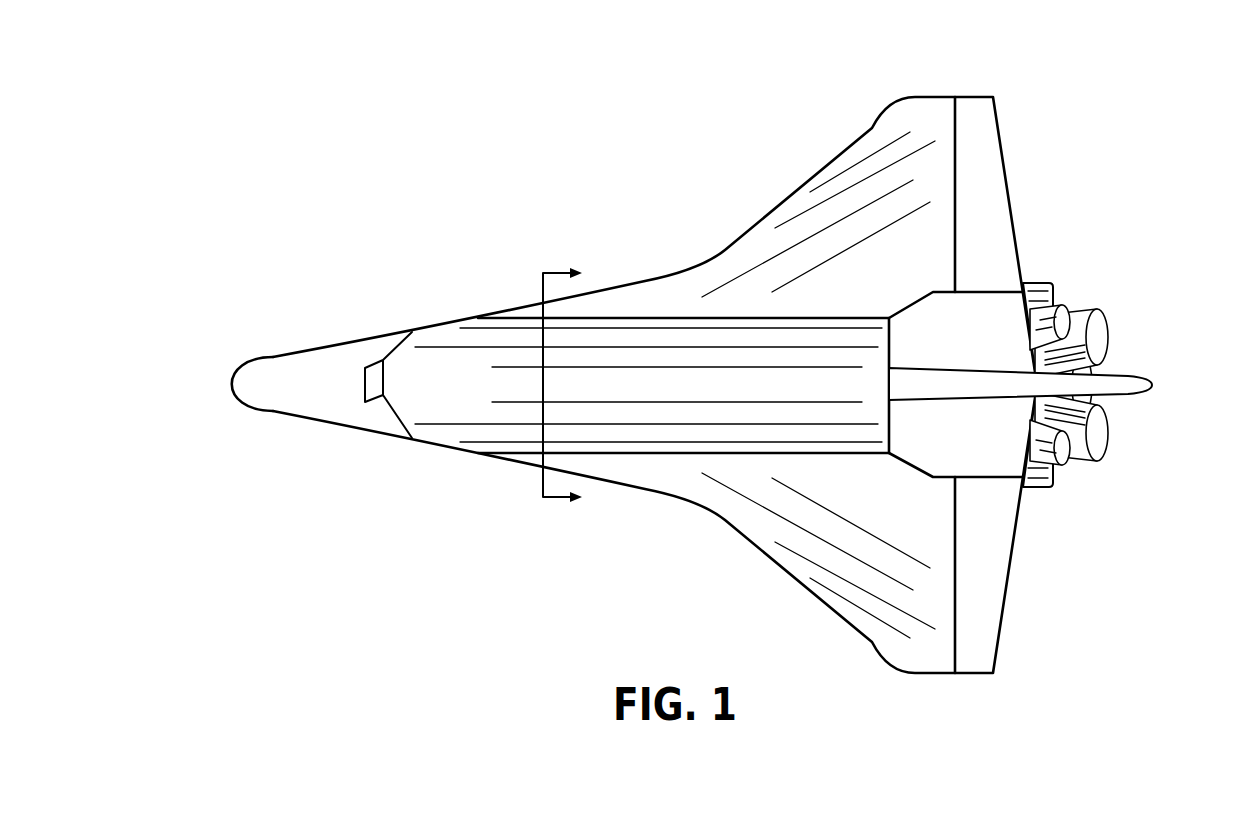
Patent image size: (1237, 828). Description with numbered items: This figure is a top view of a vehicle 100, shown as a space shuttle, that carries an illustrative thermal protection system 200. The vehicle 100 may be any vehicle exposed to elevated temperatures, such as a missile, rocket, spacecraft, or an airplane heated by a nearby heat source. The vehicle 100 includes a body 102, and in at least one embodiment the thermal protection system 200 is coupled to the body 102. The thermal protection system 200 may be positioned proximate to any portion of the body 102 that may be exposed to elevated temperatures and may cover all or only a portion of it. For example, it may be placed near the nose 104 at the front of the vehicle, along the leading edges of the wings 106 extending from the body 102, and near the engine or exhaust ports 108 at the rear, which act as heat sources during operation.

The vehicle 100 is at (478, 174).
The body 102 is at (650, 385).
The thermal protection system 200 is at (719, 298).
The nose 104 is at (262, 390).
The wings 106 is at (912, 130).
The engine or exhaust port 108 is at (1102, 340).